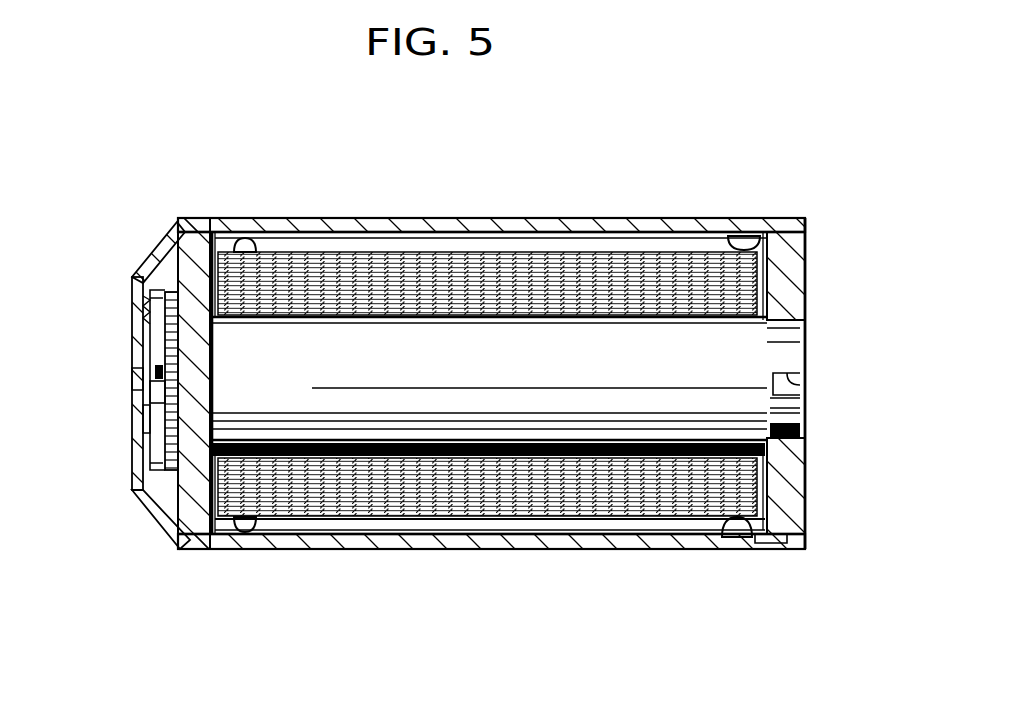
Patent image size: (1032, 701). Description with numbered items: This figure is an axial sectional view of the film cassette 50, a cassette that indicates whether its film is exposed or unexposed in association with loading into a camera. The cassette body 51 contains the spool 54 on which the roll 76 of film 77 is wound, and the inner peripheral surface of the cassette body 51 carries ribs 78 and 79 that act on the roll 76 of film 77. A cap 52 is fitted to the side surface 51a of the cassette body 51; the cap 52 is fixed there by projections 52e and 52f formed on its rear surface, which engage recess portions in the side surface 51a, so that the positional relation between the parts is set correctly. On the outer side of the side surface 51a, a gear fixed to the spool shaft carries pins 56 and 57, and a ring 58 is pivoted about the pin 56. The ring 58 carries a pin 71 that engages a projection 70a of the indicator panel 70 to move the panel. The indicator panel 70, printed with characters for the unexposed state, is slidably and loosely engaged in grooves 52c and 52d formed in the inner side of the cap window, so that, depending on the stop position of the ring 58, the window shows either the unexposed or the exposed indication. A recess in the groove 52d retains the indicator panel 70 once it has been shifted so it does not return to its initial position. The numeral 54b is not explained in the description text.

The film cassette 50 is at (416, 196).
The cassette body 51 is at (503, 540).
The side surface 51a is at (152, 517).
The cap 52 is at (141, 230).
The groove 52c is at (140, 378).
The groove 52d is at (133, 400).
The projection 52e is at (182, 227).
The projection 52f is at (200, 553).
The spool 54 is at (619, 452).
The groove 54b is at (803, 383).
The pin 56 is at (165, 445).
The pin 57 is at (150, 330).
The ring 58 is at (135, 270).
The indicator panel 70 is at (150, 383).
The projection 70a is at (183, 403).
The pin 71 is at (185, 380).
The roll 76 is at (423, 517).
The film 77 is at (522, 245).
The rib 78 is at (250, 240).
The rib 79 is at (758, 233).